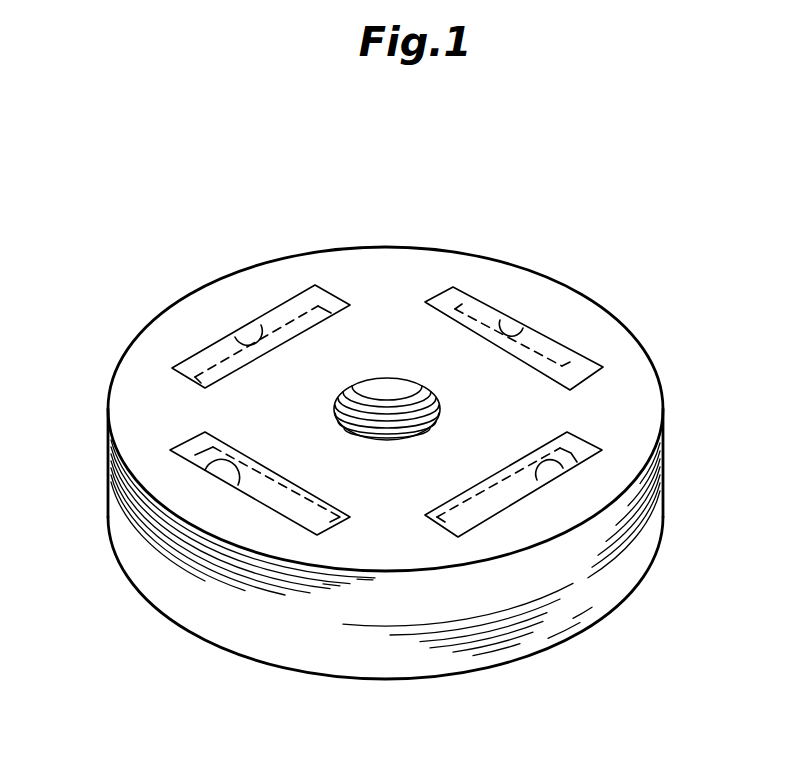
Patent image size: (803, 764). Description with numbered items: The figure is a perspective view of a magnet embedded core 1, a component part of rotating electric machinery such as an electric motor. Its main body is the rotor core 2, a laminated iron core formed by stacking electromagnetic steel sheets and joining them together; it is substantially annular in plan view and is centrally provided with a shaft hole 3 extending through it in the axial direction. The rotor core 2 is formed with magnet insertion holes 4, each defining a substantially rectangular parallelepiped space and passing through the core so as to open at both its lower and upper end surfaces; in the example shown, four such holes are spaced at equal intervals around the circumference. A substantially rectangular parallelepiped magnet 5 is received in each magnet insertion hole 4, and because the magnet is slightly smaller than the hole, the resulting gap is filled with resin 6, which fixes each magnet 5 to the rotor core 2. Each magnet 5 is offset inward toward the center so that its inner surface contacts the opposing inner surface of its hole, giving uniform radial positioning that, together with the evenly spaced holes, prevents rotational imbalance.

The magnet embedded core 1 is at (398, 436).
The rotor core 2 is at (613, 313).
The shaft hole 3 is at (407, 402).
The magnet insertion hole 4 is at (261, 325).
The magnet 5 is at (190, 452).
The resin 6 is at (293, 305).